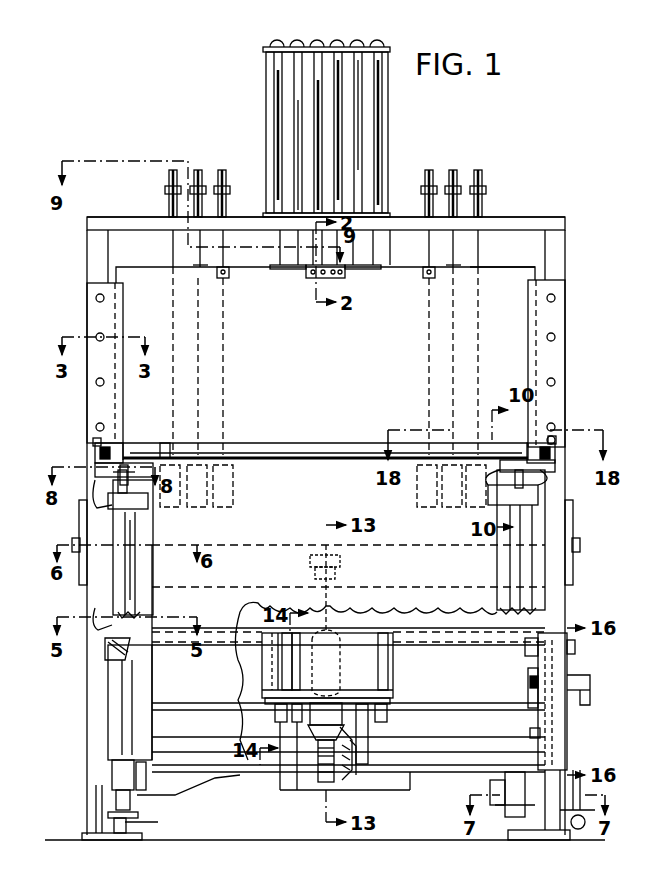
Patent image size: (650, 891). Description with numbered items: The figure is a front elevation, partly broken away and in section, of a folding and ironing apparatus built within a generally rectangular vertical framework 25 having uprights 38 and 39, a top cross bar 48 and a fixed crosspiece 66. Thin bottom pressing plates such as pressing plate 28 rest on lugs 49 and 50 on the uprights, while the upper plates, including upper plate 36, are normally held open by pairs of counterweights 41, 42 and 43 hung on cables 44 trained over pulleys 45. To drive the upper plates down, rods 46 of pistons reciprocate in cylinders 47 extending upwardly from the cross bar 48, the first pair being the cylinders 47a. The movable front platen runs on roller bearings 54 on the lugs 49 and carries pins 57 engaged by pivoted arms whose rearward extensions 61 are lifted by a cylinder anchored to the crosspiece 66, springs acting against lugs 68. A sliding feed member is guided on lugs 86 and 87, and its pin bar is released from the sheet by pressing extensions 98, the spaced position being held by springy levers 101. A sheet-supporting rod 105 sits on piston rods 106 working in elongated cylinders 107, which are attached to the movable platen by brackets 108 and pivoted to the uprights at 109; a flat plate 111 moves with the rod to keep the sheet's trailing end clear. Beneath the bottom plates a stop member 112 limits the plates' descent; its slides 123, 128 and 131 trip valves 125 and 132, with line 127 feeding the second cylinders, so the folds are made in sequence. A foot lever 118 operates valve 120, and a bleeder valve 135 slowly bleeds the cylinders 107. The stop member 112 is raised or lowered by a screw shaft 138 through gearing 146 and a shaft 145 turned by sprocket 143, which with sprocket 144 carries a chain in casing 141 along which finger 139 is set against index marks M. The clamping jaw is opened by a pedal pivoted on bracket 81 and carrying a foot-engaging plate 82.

The framework 25 is at (540, 215).
The upright 38 is at (96, 262).
The upright 39 is at (560, 256).
The upper plate 36 is at (505, 268).
The top cross bar 48 is at (240, 215).
The cylinder 47 is at (308, 126).
The cylinder 47a is at (280, 45).
The pulley 45 is at (178, 172).
The rod 46 is at (292, 252).
The cable 44 is at (178, 360).
The rod 105 is at (362, 432).
The counterweight 43 is at (235, 490).
The counterweight 42 is at (205, 506).
The counterweight 41 is at (309, 496).
The piston rod 106 is at (112, 462).
The lever 101 is at (93, 440).
The extension 98 is at (553, 438).
The lug 86 is at (95, 465).
The lug 87 is at (548, 462).
The lug 68 is at (97, 495).
The bracket 108 is at (130, 500).
The rearward extension 61 is at (79, 520).
The pin 57 is at (72, 545).
The cylinder 107 is at (520, 568).
The pressing plate 28 is at (472, 628).
The crosspiece 66 is at (445, 692).
The shaft 145 is at (452, 765).
The stop member 112 is at (395, 675).
The slide 131 is at (388, 653).
The slide 123 is at (262, 664).
The slide 128 is at (295, 672).
The valve 125 is at (275, 713).
The valve 132 is at (390, 715).
The line 127 is at (288, 755).
The screw shaft 138 is at (318, 765).
The gearing 146 is at (335, 785).
The flat plate 111 is at (225, 770).
The sprocket 143 is at (585, 738).
The lug 50 is at (525, 645).
The sprocket 144 is at (578, 648).
The valve 120 is at (595, 672).
The bleeder valve 135 is at (592, 690).
The casing 141 is at (528, 697).
The index marks M is at (530, 682).
The finger 139 is at (530, 733).
The foot-engaging plate 82 is at (512, 808).
The bracket 81 is at (535, 838).
The foot lever 118 is at (582, 833).
The roller bearing 54 is at (125, 649).
The lug 49 is at (108, 660).
The pivot 109 is at (112, 824).